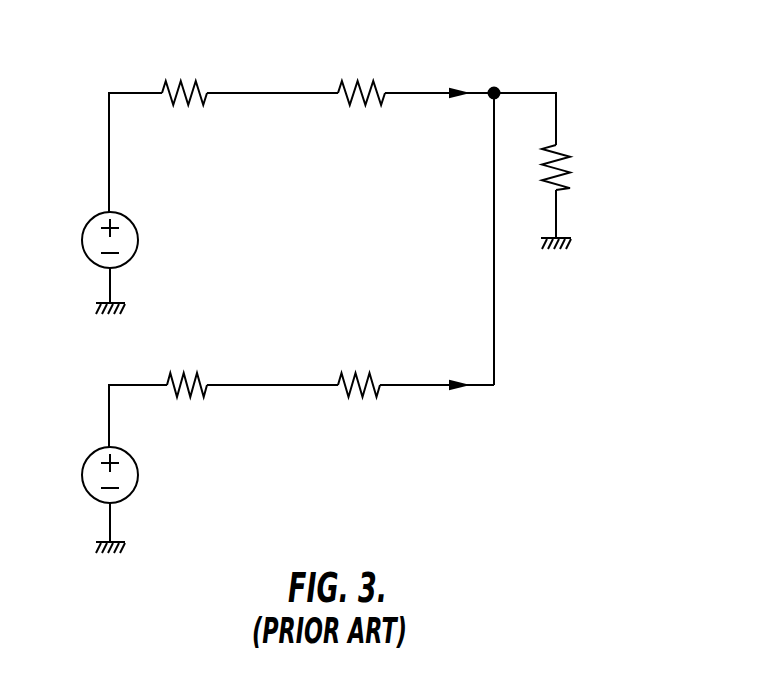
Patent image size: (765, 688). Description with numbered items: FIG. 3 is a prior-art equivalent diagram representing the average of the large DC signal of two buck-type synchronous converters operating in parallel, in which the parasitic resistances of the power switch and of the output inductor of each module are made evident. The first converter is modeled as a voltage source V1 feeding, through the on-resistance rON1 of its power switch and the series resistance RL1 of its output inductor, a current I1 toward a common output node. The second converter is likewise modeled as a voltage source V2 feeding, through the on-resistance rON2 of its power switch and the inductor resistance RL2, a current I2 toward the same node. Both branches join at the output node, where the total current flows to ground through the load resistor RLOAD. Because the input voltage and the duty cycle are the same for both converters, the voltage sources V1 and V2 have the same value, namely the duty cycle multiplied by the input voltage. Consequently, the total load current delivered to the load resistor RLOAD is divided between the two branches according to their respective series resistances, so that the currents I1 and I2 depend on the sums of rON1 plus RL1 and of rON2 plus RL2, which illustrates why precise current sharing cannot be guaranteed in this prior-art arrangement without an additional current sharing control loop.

The on-resistance of first switch rON1 is at (181, 56).
The first inductor resistance RL1 is at (361, 70).
The first phase current I1 is at (462, 59).
The load resistor RLOAD is at (588, 168).
The voltage source V1 is at (167, 240).
The on-resistance of second switch rON2 is at (187, 349).
The second inductor resistance RL2 is at (361, 359).
The second phase current I2 is at (463, 412).
The voltage source V2 is at (167, 475).